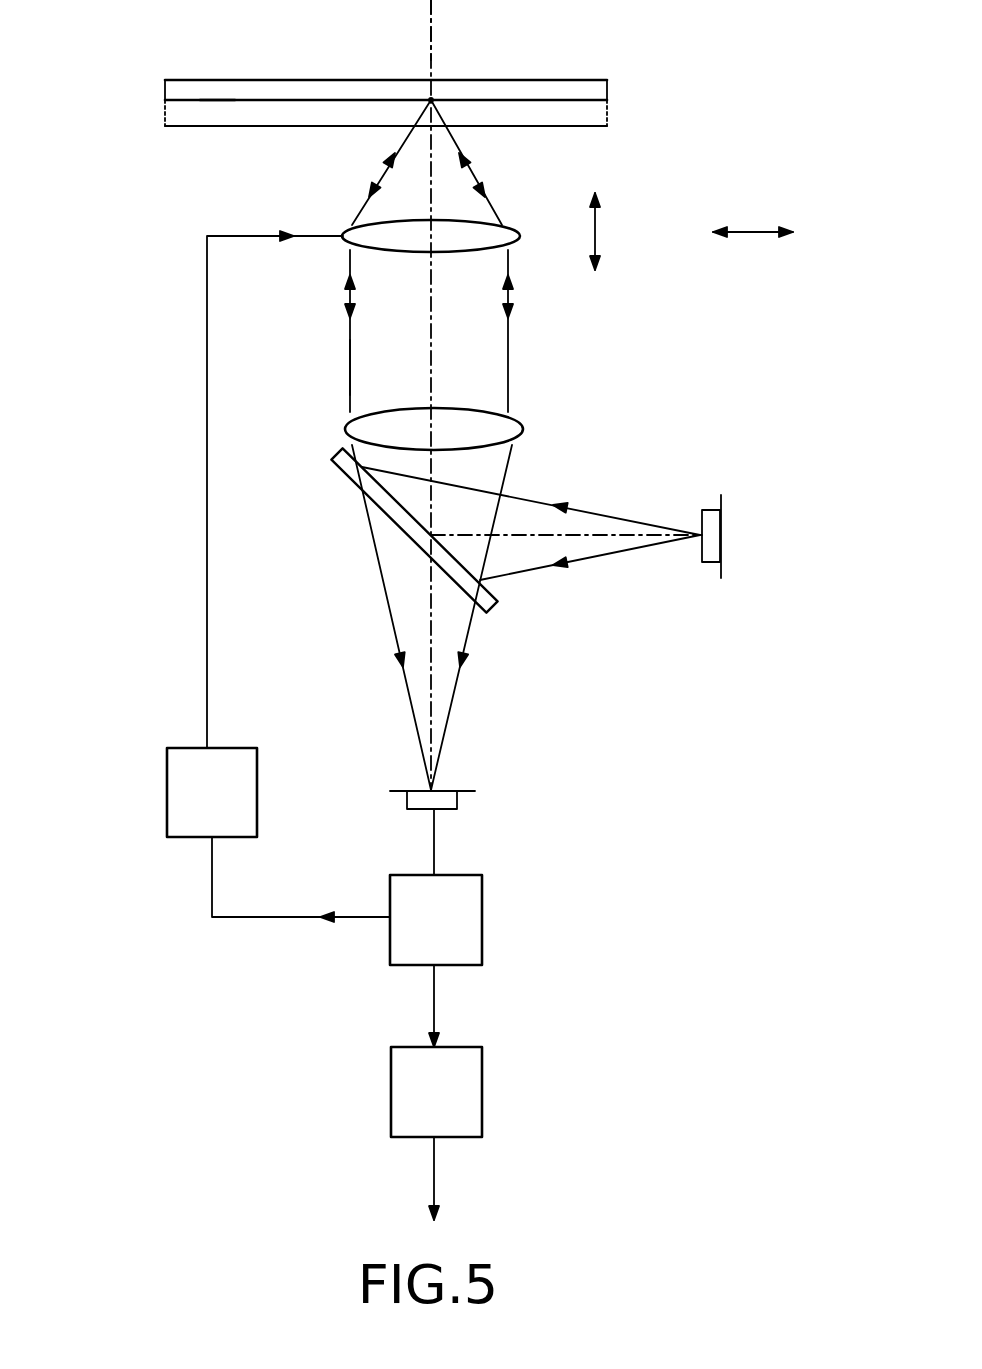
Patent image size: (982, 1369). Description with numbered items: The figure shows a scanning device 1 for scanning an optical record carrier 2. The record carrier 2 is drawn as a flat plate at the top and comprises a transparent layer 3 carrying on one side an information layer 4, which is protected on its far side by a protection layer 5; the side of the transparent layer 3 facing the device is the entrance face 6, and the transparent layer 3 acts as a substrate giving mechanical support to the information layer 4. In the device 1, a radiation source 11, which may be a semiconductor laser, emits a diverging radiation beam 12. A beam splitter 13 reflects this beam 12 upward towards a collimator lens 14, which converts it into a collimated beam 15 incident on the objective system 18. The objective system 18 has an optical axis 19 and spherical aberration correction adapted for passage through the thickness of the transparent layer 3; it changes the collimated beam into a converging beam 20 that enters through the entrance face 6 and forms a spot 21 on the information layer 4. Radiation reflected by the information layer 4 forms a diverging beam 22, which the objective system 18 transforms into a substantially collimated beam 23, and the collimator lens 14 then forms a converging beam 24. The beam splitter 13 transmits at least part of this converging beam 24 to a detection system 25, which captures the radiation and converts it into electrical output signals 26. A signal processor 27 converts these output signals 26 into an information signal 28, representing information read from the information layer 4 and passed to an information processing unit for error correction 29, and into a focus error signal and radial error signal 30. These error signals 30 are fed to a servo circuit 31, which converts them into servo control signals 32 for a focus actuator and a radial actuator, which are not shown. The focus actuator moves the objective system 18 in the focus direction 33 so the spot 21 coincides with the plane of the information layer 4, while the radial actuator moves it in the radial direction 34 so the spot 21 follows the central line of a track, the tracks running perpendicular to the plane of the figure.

The scanning device 1 is at (137, 511).
The optical record carrier 2 is at (121, 30).
The transparent layer 3 is at (175, 113).
The information layer 4 is at (217, 100).
The protection layer 5 is at (173, 90).
The entrance face 6 is at (198, 127).
The radiation source 11 is at (723, 538).
The radiation beam 12 is at (650, 525).
The beam splitter 13 is at (335, 476).
The collimator lens 14 is at (345, 428).
The collimated beam 15 is at (350, 365).
The objective system 18 is at (345, 232).
The optical axis 19 is at (431, 20).
The converging beam 20 is at (392, 157).
The spot 21 is at (431, 100).
The diverging beam 22 is at (486, 195).
The substantially collimated beam 23 is at (512, 313).
The converging beam 24 is at (505, 468).
The detection system 25 is at (475, 795).
The electrical output signals 26 is at (436, 848).
The signal processor 27 is at (483, 920).
The information signal 28 is at (436, 1008).
The information processing unit for error correction 29 is at (483, 1083).
The focus error signal and radial error signal 30 is at (265, 918).
The servo circuit 31 is at (167, 798).
The servo control signals 32 is at (207, 622).
The focus direction 33 is at (598, 228).
The radial direction 34 is at (755, 234).